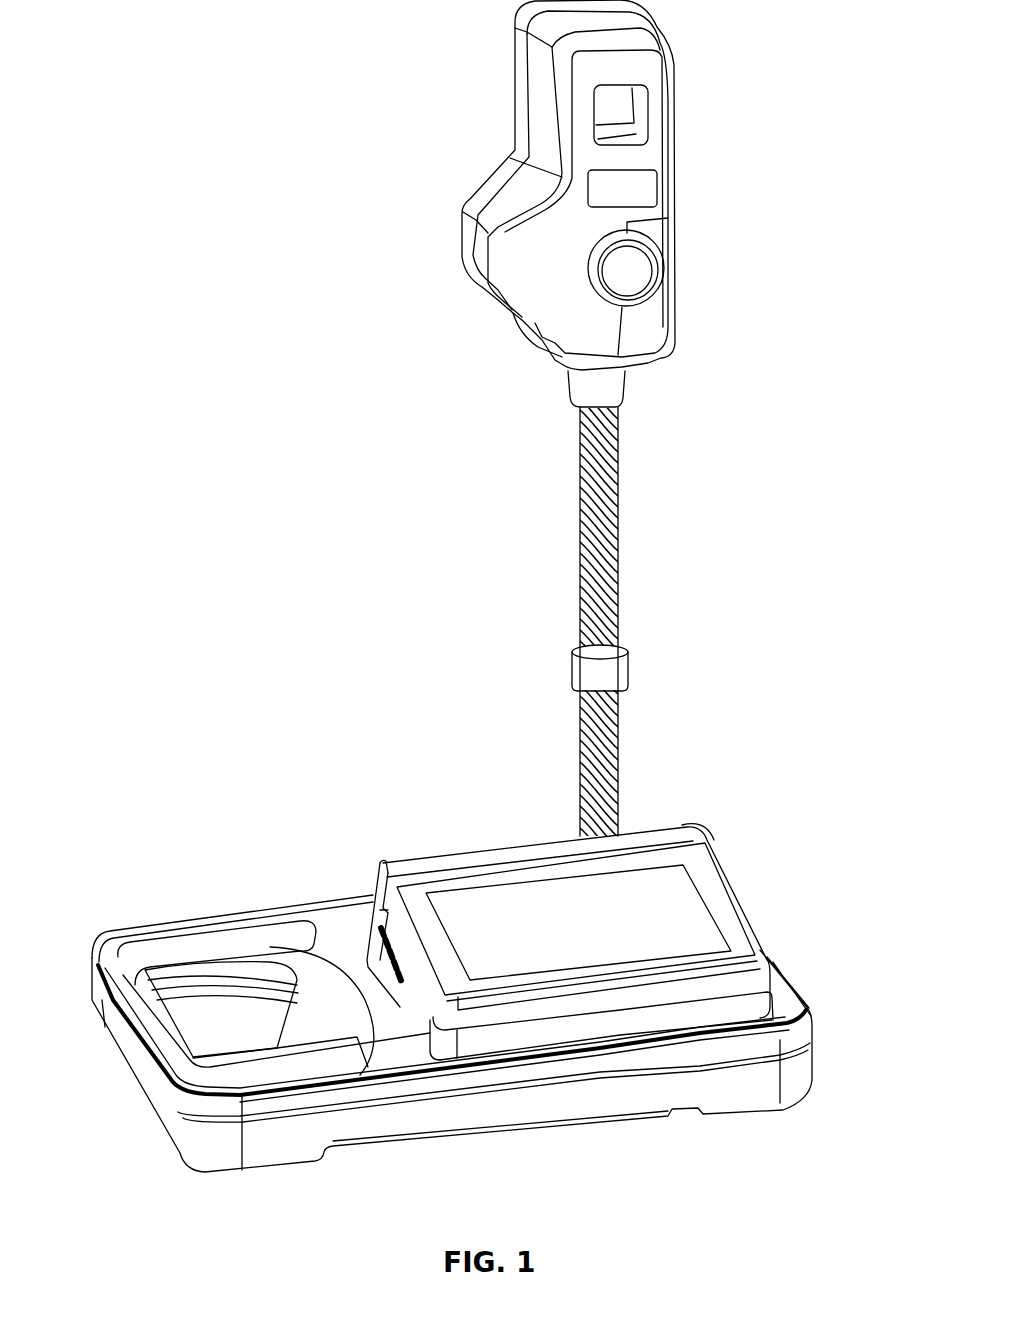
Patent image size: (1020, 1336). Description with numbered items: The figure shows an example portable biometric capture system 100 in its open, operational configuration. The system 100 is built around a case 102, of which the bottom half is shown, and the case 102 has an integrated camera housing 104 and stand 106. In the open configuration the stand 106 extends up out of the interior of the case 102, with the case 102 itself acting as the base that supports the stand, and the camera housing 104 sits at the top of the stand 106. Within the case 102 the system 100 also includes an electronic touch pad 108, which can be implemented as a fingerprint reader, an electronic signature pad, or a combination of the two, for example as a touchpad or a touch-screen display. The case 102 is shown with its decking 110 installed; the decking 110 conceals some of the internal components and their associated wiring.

The portable biometric capture system 100 is at (183, 50).
The case 102 is at (124, 1018).
The camera housing 104 is at (728, 118).
The stand 106 is at (620, 521).
The electronic touch pad 108 is at (522, 923).
The decking 110 is at (322, 923).